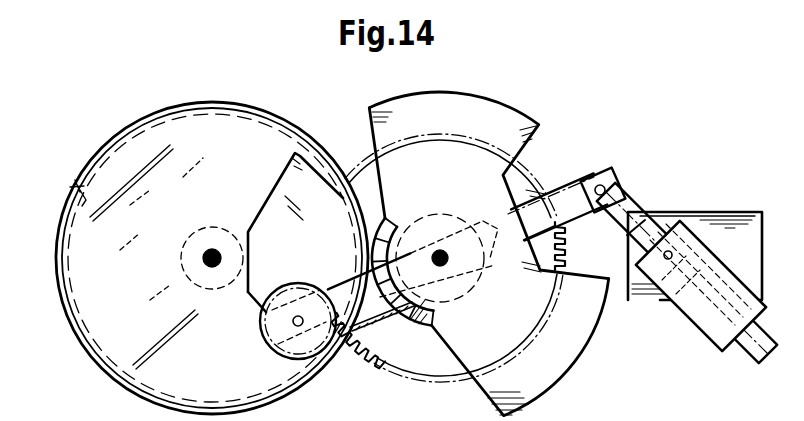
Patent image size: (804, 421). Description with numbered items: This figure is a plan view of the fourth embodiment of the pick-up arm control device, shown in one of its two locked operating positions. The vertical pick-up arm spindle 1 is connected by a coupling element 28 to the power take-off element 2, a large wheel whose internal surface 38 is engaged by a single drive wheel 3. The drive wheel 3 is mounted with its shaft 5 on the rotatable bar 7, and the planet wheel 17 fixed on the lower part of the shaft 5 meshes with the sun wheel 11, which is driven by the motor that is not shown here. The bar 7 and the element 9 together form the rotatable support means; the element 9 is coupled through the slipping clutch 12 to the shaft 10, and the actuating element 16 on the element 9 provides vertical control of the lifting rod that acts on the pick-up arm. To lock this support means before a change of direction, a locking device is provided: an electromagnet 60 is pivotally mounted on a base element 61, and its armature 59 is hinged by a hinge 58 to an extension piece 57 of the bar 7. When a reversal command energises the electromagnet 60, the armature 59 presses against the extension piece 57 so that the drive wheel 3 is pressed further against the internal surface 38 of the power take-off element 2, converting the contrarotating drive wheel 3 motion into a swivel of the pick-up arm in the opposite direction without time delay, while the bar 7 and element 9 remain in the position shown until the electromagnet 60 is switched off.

The pick-up arm spindle 1 is at (201, 268).
The power take-off element 2 is at (268, 92).
The drive wheel 3 is at (291, 283).
The shaft 5 is at (291, 326).
The bar 7 is at (371, 300).
The element 9 is at (465, 104).
The shaft 10 is at (449, 265).
The sun wheel 11 is at (442, 368).
The slipping clutch 12 is at (449, 222).
The actuating element 16 is at (403, 224).
The planet wheel 17 is at (295, 232).
The coupling element 28 is at (186, 254).
The internal surface 38 is at (76, 187).
The extension piece 57 is at (567, 197).
The hinge 58 is at (601, 184).
The armature 59 is at (632, 201).
The electromagnet 60 is at (703, 327).
The base element 61 is at (753, 213).